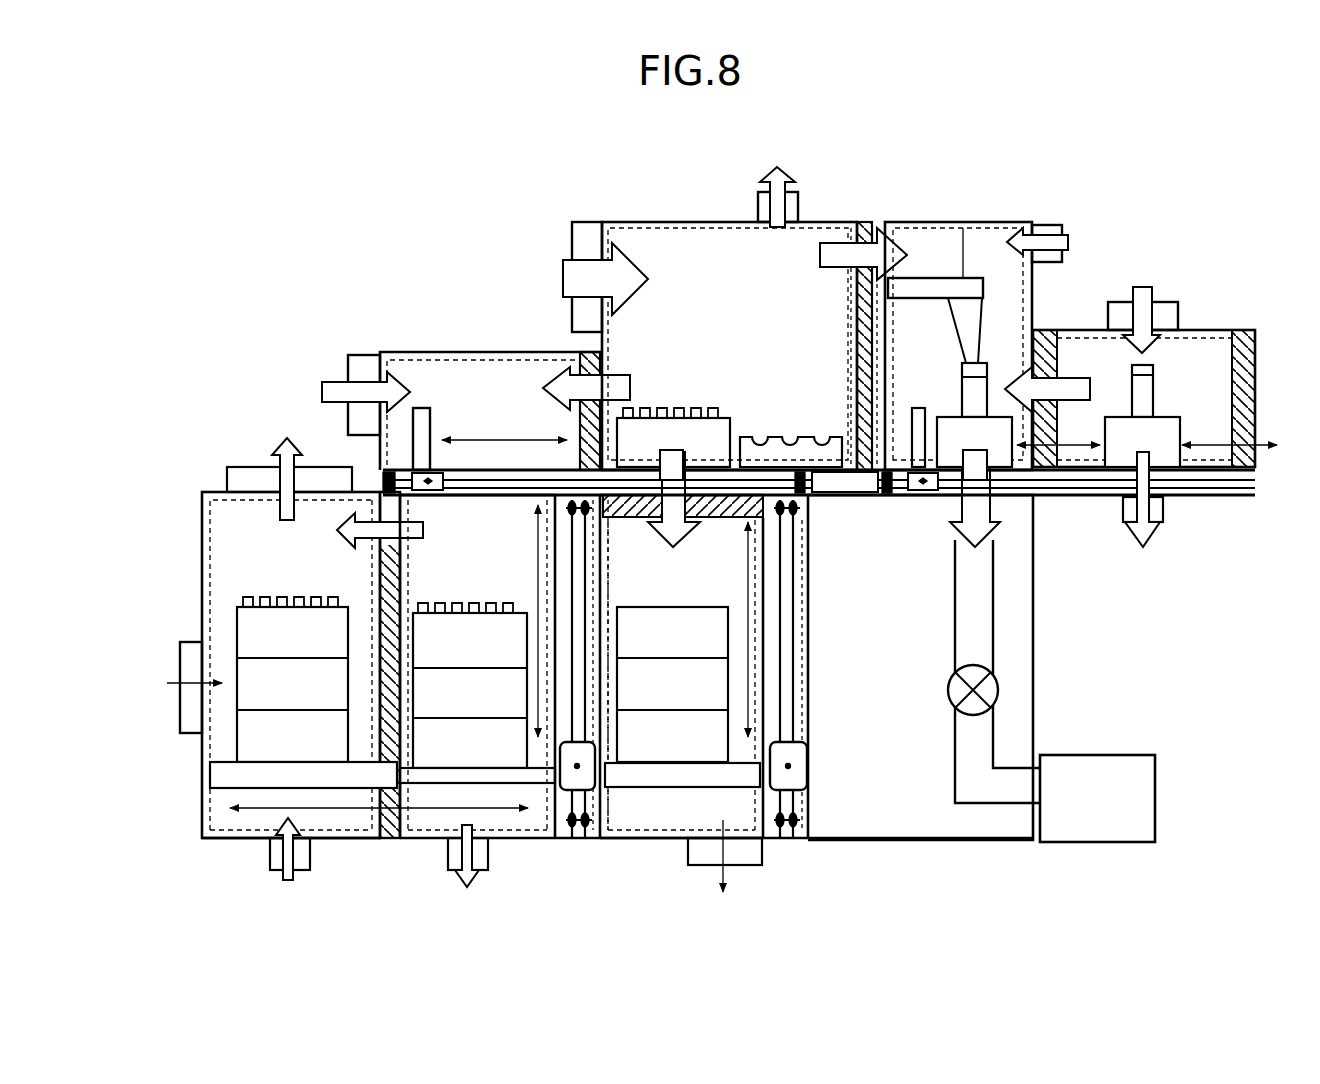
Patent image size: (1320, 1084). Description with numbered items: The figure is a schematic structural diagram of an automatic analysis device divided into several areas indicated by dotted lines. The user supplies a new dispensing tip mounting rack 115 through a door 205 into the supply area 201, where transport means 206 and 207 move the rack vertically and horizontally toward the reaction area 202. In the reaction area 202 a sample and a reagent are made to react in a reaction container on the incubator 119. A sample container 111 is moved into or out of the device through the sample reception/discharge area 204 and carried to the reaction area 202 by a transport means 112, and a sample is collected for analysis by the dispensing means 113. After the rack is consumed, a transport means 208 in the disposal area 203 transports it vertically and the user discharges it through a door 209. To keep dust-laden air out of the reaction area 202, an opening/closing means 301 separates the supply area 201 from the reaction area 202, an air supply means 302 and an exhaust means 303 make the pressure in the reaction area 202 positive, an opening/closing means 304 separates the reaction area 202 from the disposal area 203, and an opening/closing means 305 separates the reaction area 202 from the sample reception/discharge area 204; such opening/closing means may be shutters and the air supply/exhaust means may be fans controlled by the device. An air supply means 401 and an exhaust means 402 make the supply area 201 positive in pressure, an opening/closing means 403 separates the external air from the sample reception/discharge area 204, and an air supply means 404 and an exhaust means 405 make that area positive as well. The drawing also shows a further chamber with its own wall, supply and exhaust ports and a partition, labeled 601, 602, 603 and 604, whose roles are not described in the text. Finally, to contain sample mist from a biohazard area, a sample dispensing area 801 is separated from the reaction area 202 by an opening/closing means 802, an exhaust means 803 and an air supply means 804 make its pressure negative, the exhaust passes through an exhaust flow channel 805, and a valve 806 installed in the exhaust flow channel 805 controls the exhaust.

The sample container 111 is at (1170, 502).
The transport means 112 is at (916, 406).
The dispensing means 113 is at (932, 235).
The dispensing tip mounting rack 115 is at (233, 620).
The incubator 119 is at (795, 440).
The supply area 201 is at (218, 512).
The reaction area 202 is at (640, 240).
The disposal area 203 is at (590, 845).
The sample reception/discharge area 204 is at (1240, 328).
The door 205 is at (193, 735).
The transport means 206 is at (203, 824).
The transport means 207 is at (435, 425).
The transport means 208 is at (640, 836).
The door 209 is at (765, 854).
The opening/closing means 301 is at (592, 362).
The air supply means 302 is at (570, 268).
The exhaust means 303 is at (758, 200).
The opening/closing means 304 is at (752, 520).
The opening/closing means 305 is at (1050, 498).
The air supply means 401 is at (348, 380).
The exhaust means 402 is at (447, 870).
The opening/closing means 403 is at (1258, 490).
The air supply means 404 is at (1132, 300).
The exhaust means 405 is at (1125, 527).
The load lock chamber 601 is at (397, 365).
The exhaust port 602 is at (263, 466).
The gas supply port 603 is at (272, 870).
The partition wall 604 is at (385, 840).
The sample dispensing area 801 is at (1008, 230).
The opening/closing means 802 is at (862, 240).
The exhaust means 803 is at (1113, 843).
The air supply means 804 is at (1047, 225).
The exhaust flow channel 805 is at (998, 720).
The valve 806 is at (998, 680).